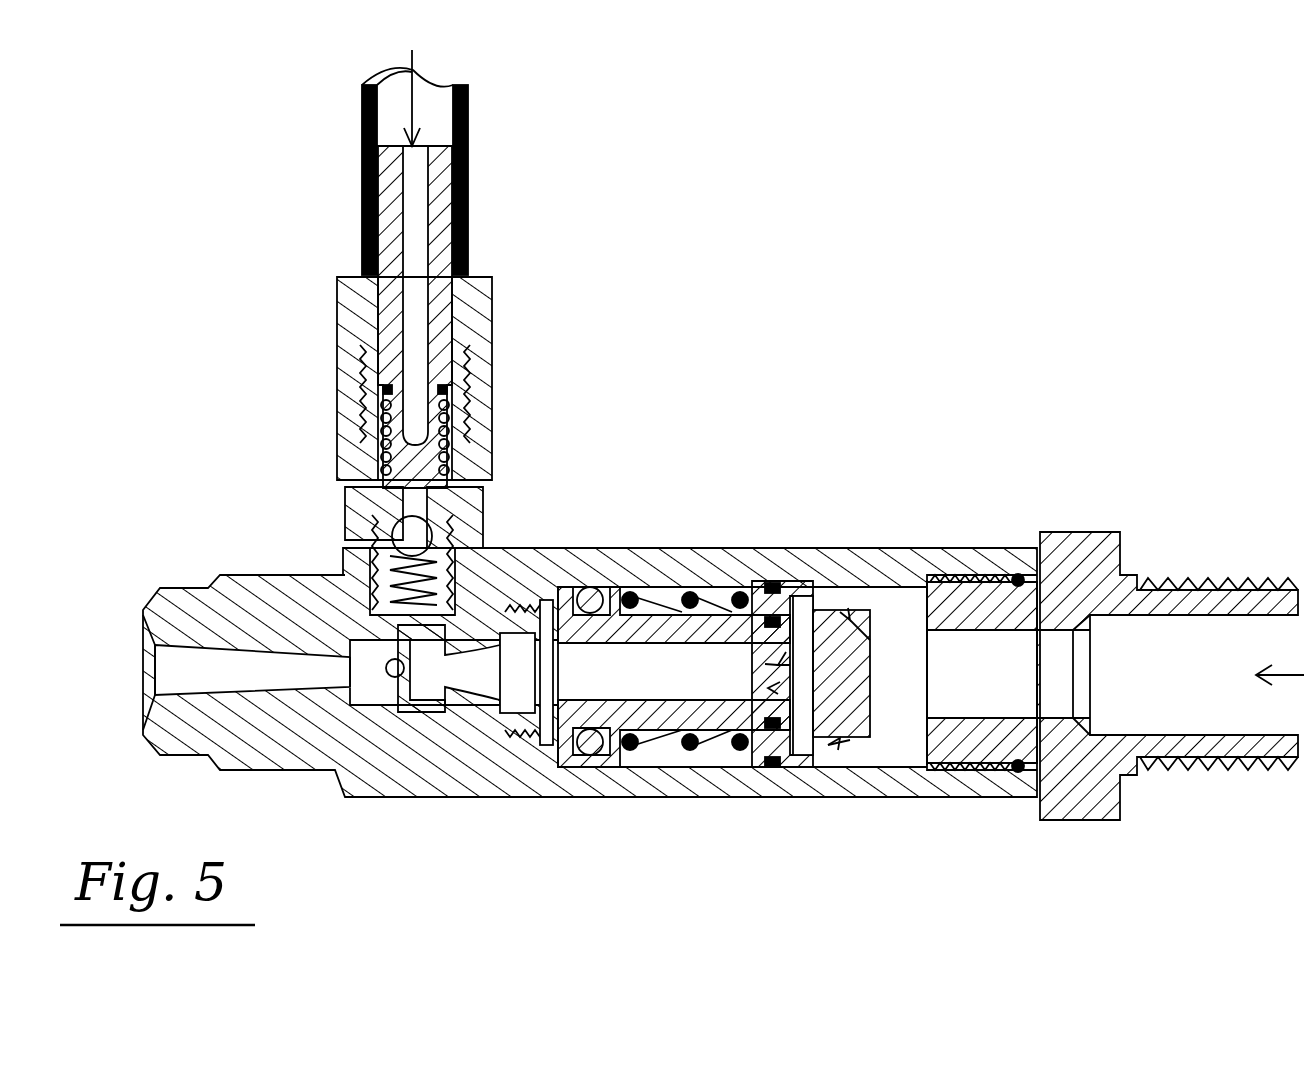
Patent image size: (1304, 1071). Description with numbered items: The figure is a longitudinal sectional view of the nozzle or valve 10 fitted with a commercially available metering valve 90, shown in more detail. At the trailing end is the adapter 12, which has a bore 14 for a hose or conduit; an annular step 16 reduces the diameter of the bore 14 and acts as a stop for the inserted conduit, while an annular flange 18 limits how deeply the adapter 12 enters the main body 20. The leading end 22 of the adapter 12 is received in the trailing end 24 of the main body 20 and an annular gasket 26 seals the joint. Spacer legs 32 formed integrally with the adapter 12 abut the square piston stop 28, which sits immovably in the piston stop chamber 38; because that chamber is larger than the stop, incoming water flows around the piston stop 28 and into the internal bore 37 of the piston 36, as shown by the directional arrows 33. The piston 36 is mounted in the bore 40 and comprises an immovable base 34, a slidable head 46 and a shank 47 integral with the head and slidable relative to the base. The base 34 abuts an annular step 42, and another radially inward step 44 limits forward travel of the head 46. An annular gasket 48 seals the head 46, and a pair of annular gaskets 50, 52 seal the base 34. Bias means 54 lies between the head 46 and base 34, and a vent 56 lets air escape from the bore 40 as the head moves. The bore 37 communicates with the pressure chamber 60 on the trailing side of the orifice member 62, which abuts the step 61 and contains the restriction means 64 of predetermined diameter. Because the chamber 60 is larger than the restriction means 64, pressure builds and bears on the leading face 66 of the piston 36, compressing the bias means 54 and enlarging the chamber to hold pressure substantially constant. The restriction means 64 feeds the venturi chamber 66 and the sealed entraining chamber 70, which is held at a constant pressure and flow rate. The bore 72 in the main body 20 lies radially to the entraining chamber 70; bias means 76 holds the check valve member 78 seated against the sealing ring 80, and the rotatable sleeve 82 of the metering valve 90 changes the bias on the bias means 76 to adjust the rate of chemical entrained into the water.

The nozzle or valve 10 is at (178, 403).
The adapter 12 is at (1218, 580).
The bore 14 is at (1265, 620).
The annular step 16 is at (1082, 722).
The annular flange 18 is at (1062, 532).
The main body 20 is at (585, 545).
The leading end of adapter 22 is at (995, 622).
The trailing end of main body 24 is at (1005, 552).
The annular gasket 26 is at (1024, 775).
The piston stop 28 is at (835, 610).
The spacer legs 32 is at (925, 710).
The directional arrows 33 is at (778, 665).
The piston base 34 is at (805, 770).
The piston 36 is at (700, 755).
The internal bore 37 is at (685, 645).
The piston stop chamber 38 is at (912, 780).
The bore 40 is at (655, 585).
The annular step 42 is at (720, 600).
The radially inward step 44 is at (590, 585).
The piston head 46 is at (580, 762).
The shank 47 is at (665, 635).
The annular gasket 48 is at (590, 770).
The annular gasket 50 is at (768, 582).
The annular gasket 52 is at (760, 700).
The bias means 54 is at (665, 752).
The vent 56 is at (660, 592).
The pressure chamber 60 is at (528, 684).
The step 61 is at (475, 640).
The orifice member 62 is at (470, 712).
The restriction means 64 is at (412, 695).
The leading end or face of piston; venturi chamber 66 is at (165, 655).
The entraining chamber 70 is at (398, 660).
The bore 72 is at (395, 625).
The bias means 76 is at (392, 578).
The check valve member 78 is at (392, 536).
The sealing ring 80 is at (395, 510).
The rotatable sleeve 82 is at (337, 328).
The metering valve 90 is at (495, 305).